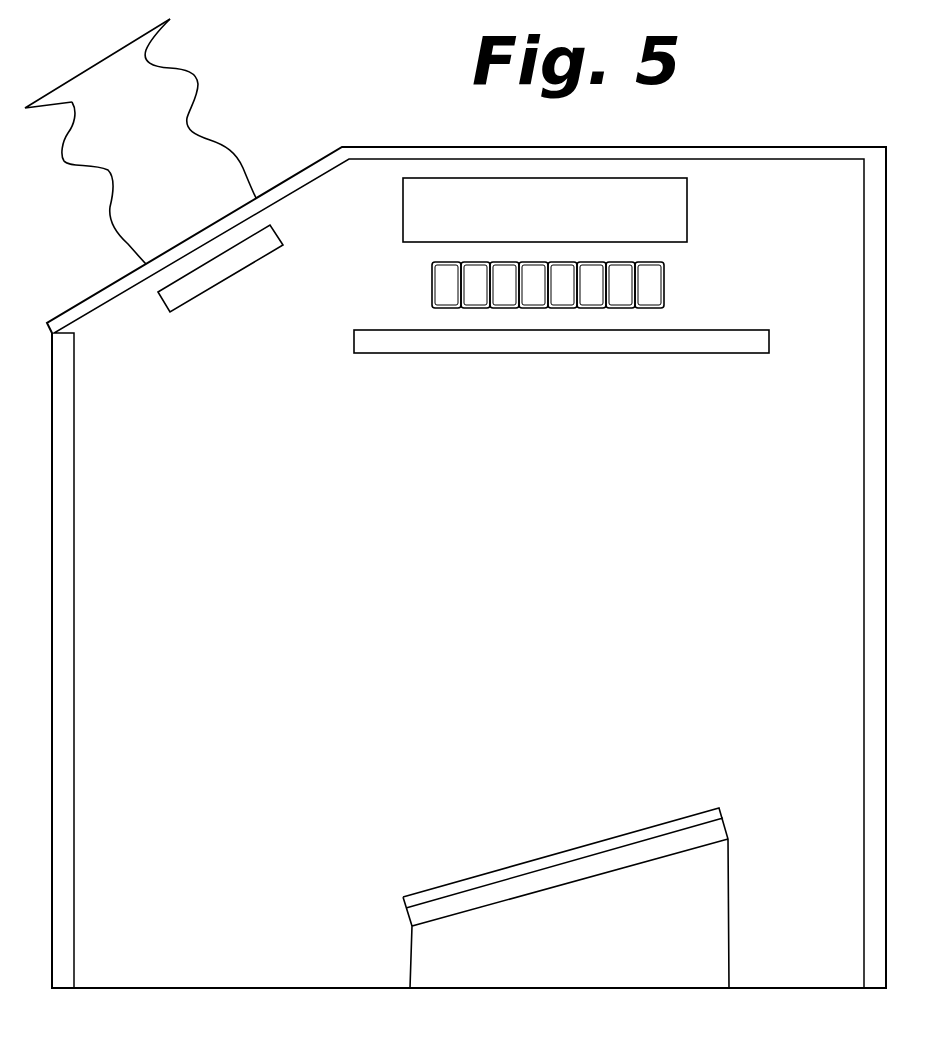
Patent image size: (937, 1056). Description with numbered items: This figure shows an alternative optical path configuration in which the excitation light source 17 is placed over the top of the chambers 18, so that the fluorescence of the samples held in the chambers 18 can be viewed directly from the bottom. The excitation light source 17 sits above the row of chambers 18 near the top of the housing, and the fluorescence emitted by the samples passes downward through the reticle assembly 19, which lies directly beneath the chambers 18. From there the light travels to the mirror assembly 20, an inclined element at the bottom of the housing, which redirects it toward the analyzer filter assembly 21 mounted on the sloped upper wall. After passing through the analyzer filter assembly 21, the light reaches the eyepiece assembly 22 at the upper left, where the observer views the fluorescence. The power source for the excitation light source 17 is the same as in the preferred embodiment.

The excitation light source 17 is at (689, 214).
The chambers 18 is at (665, 276).
The reticle assembly 19 is at (658, 354).
The mirror assembly 20 is at (580, 847).
The analyzer filter assembly 21 is at (225, 280).
The eyepiece assembly 22 is at (80, 170).